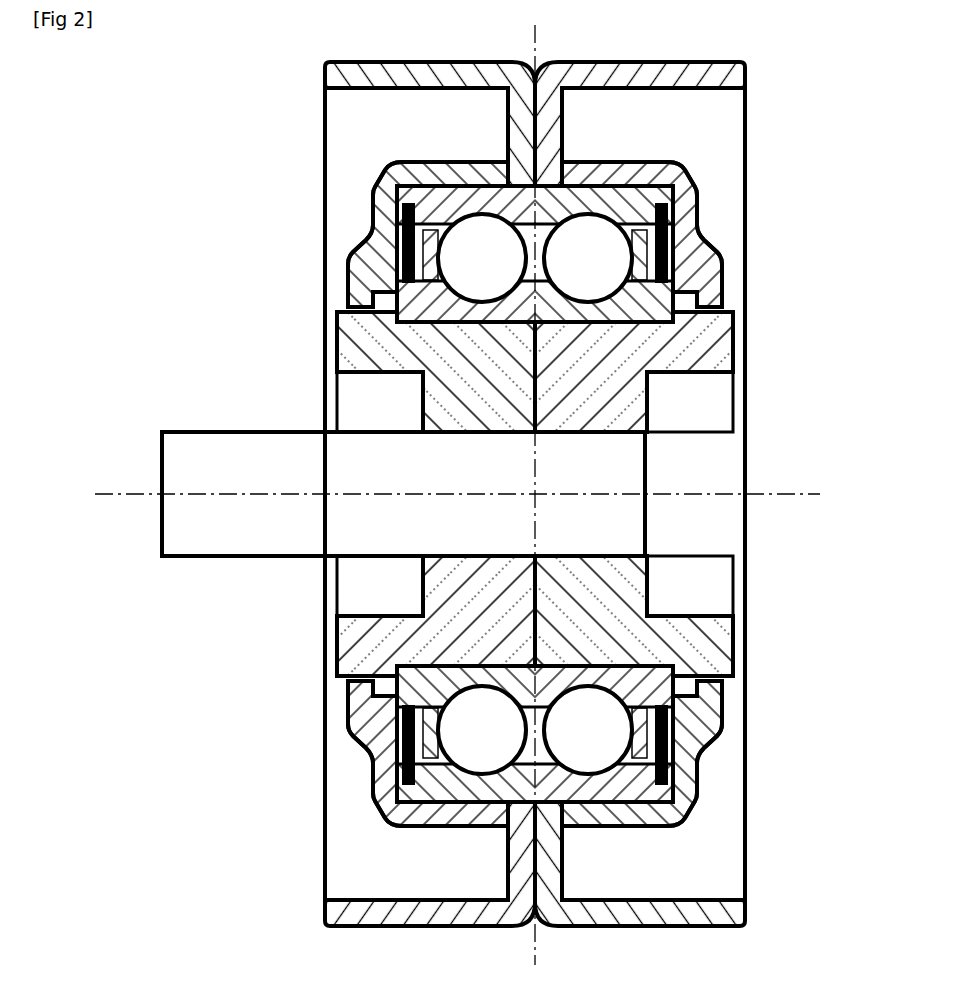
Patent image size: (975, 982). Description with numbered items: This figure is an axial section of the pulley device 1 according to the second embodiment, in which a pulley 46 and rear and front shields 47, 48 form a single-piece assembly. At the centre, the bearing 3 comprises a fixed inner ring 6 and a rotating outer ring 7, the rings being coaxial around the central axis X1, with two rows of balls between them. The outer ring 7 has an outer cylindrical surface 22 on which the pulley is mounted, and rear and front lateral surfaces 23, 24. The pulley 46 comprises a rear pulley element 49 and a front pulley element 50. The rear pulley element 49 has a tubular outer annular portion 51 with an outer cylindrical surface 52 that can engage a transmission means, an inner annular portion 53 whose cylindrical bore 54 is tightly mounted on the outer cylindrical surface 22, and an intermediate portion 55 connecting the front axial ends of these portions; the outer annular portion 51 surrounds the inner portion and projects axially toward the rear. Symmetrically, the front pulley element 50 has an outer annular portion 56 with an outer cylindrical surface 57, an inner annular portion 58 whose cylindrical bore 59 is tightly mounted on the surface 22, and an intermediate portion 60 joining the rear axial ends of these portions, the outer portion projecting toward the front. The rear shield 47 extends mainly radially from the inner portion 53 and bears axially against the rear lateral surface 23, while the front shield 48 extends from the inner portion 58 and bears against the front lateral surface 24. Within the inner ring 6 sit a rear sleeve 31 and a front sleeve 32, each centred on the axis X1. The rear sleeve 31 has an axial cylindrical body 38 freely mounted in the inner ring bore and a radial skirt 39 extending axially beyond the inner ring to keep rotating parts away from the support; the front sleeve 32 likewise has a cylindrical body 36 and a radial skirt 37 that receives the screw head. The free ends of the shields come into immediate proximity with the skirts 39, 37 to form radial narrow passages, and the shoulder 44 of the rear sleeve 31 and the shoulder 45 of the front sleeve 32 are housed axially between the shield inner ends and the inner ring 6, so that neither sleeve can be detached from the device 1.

The pulley device 1 is at (148, 574).
The bearing 3 is at (452, 742).
The inner ring 6 is at (345, 690).
The outer ring 7 is at (397, 190).
The outer cylindrical surface 22 is at (505, 880).
The rear lateral surface 23 is at (373, 788).
The front lateral surface 24 is at (697, 790).
The rear sleeve 31 is at (356, 609).
The front sleeve 32 is at (714, 605).
The axial cylindrical body 36 is at (733, 400).
The radial skirt 37 is at (730, 345).
The axial cylindrical body 38 is at (338, 400).
The radial skirt 39 is at (340, 345).
The shoulder 44 is at (350, 300).
The shoulder 45 is at (722, 300).
The pulley 46 is at (716, 870).
The rear shield 47 is at (375, 234).
The front shield 48 is at (700, 235).
The rear pulley element 49 is at (349, 107).
The front pulley element 50 is at (716, 107).
The outer annular portion 51 is at (332, 78).
The outer cylindrical surface 52 is at (385, 928).
The inner annular portion 53 is at (440, 158).
The cylindrical bore 54 is at (400, 832).
The intermediate portion 55 is at (500, 128).
The outer annular portion 56 is at (745, 75).
The outer cylindrical surface 57 is at (683, 928).
The inner annular portion 58 is at (630, 158).
The cylindrical bore 59 is at (685, 830).
The intermediate portion 60 is at (565, 128).
The central axis X1 is at (457, 482).